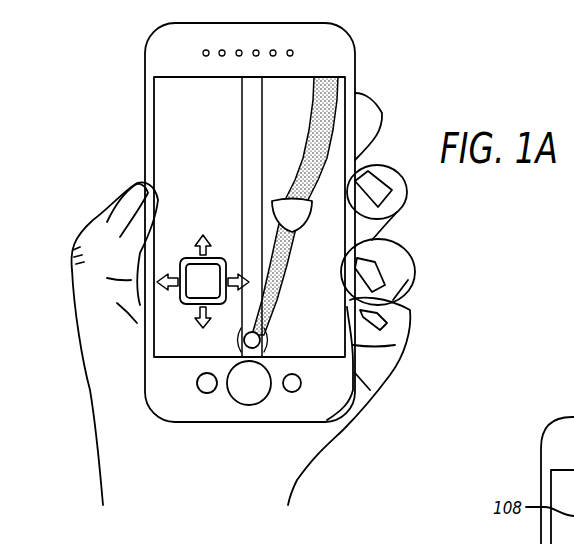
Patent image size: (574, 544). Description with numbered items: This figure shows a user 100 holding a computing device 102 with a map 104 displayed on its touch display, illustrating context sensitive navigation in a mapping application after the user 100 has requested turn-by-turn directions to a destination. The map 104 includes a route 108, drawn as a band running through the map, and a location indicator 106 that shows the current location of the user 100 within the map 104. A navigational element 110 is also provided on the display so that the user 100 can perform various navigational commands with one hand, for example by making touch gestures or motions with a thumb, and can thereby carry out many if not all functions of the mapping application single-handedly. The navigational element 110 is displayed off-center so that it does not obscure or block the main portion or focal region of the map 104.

The user 100 is at (92, 393).
The computing device 102 is at (355, 70).
The map 104 is at (293, 293).
The location indicator 106 is at (262, 340).
The route 108 is at (273, 263).
The navigational element 110 is at (216, 300).